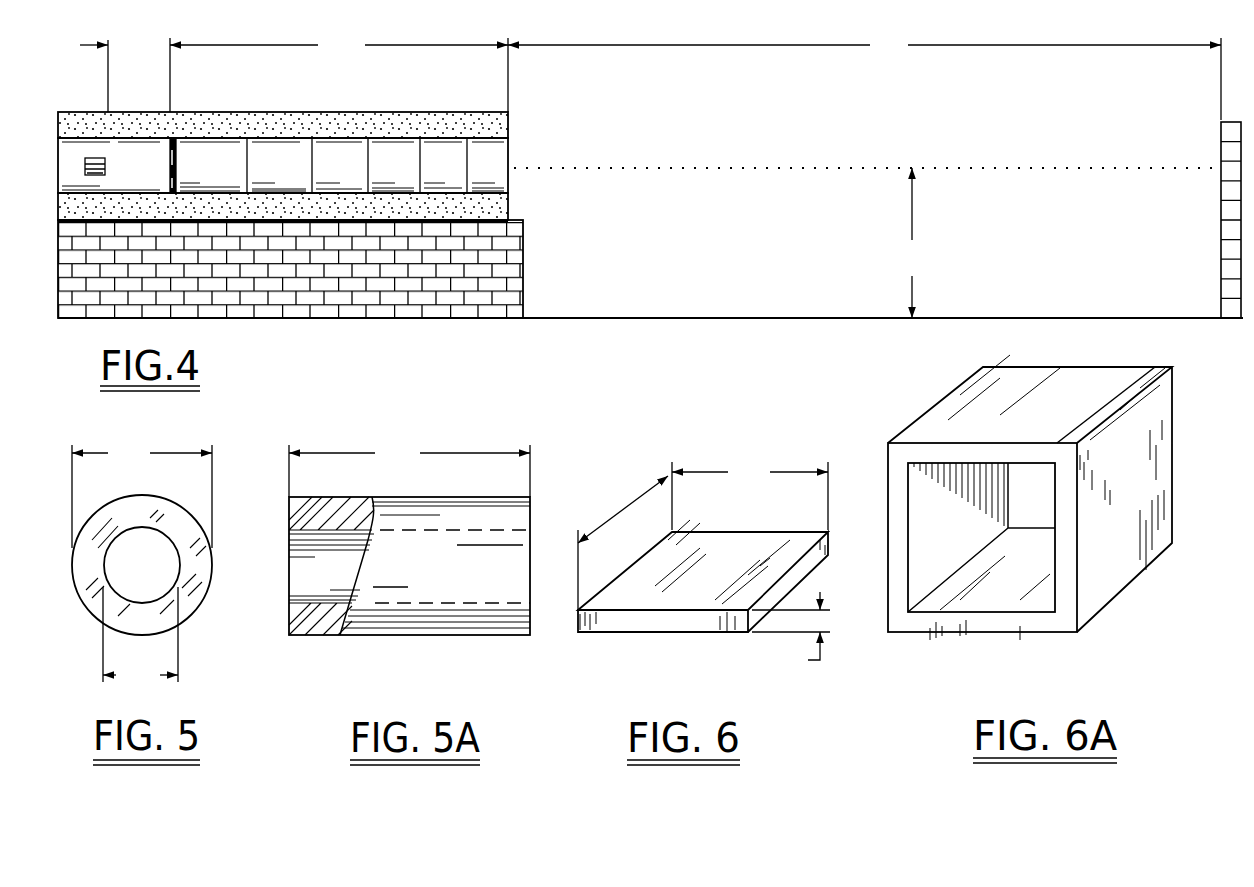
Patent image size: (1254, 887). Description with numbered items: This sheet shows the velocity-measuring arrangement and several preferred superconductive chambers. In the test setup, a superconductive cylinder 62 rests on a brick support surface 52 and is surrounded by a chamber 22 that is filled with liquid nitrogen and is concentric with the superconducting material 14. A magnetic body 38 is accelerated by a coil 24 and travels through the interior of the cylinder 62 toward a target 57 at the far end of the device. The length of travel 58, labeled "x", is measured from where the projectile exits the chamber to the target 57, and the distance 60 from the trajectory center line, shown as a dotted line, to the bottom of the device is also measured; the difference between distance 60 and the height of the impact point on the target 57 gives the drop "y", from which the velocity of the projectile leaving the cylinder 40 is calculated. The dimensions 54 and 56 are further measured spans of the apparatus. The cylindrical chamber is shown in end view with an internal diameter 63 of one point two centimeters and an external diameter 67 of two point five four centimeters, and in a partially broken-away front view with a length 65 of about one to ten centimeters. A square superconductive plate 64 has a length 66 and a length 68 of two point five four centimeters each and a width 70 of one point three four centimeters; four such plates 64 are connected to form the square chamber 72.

In FIG. 5, the superconducting material 14 is at (188, 612).
In FIG. 5A, the superconducting material 14 is at (345, 633).
In FIG. 4, the chamber 22 is at (197, 113).
In FIG. 4, the coil 24 is at (178, 178).
In FIG. 4, the magnetic body 38 is at (106, 160).
In FIG. 4, the cylinder 40 is at (313, 146).
In FIG. 4, the brick support surface 52 is at (525, 243).
In FIG. 4, the panel length 54 is at (339, 72).
In FIG. 4, the edge spacing 56 is at (125, 75).
In FIG. 4, the target 57 is at (1221, 206).
In FIG. 4, the length of travel 58 is at (864, 76).
In FIG. 4, the distance from center line to bottom 60 is at (911, 243).
In FIG. 4, the cylinder 62 is at (268, 150).
In FIG. 5, the internal diameter 63 is at (140, 637).
In FIG. 6, the superconductive plate 64 is at (661, 468).
In FIG. 5A, the length 65 is at (409, 469).
In FIG. 6, the length 66 is at (750, 495).
In FIG. 5, the external diameter 67 is at (142, 494).
In FIG. 6, the length 68 is at (623, 543).
In FIG. 6, the width 70 is at (791, 634).
In FIG. 6A, the square chamber 72 is at (1143, 592).